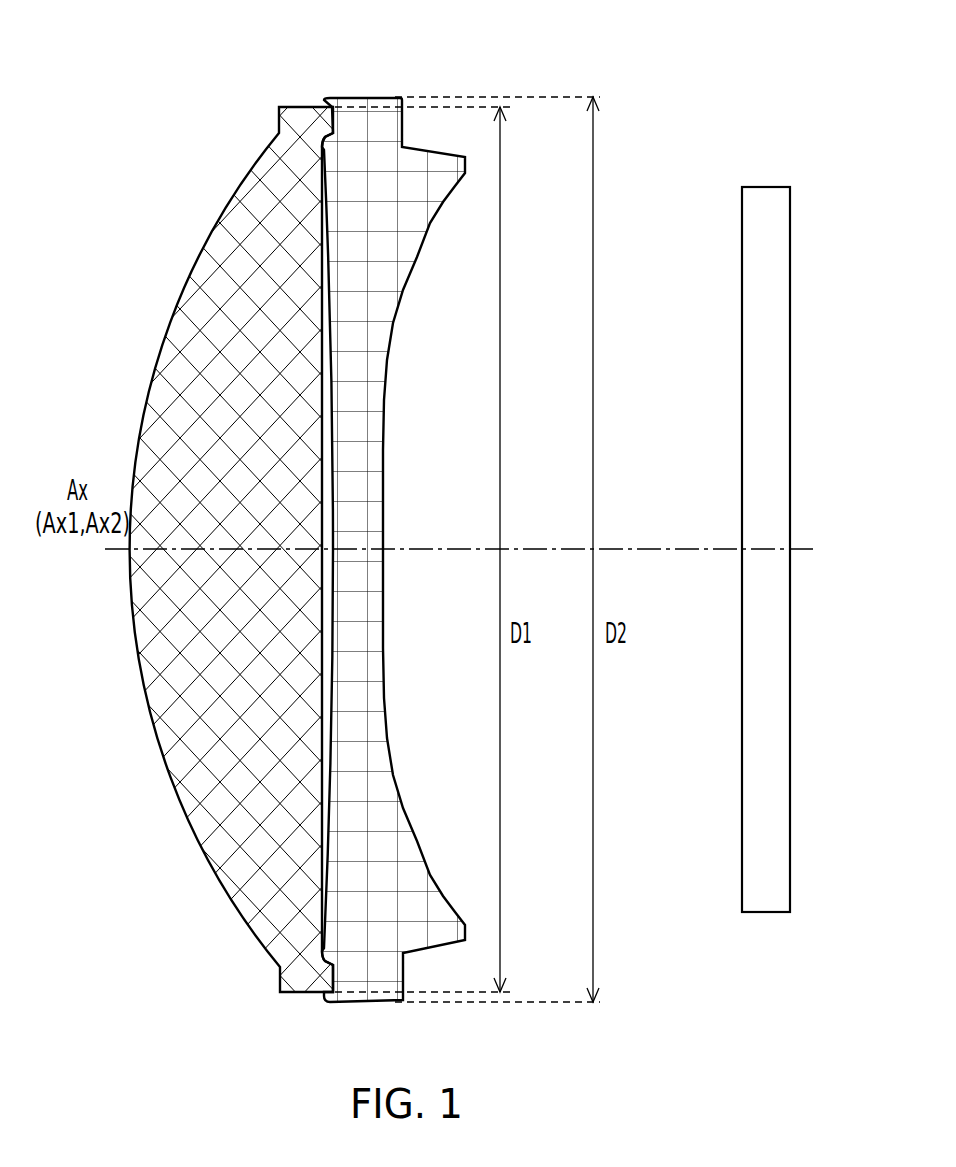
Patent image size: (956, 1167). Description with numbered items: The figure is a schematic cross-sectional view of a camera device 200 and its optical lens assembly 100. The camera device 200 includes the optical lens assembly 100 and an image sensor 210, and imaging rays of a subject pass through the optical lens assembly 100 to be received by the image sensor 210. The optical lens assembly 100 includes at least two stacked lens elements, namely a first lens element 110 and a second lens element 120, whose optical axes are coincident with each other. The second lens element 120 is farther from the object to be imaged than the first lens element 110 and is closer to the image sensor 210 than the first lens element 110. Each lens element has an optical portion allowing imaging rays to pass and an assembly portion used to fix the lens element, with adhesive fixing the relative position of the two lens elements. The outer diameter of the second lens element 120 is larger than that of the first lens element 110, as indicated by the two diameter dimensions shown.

The optical lens assembly 100 is at (392, 45).
The first lens element 110 is at (300, 127).
The second lens element 120 is at (383, 128).
The camera device 200 is at (806, 1018).
The image sensor 210 is at (769, 202).